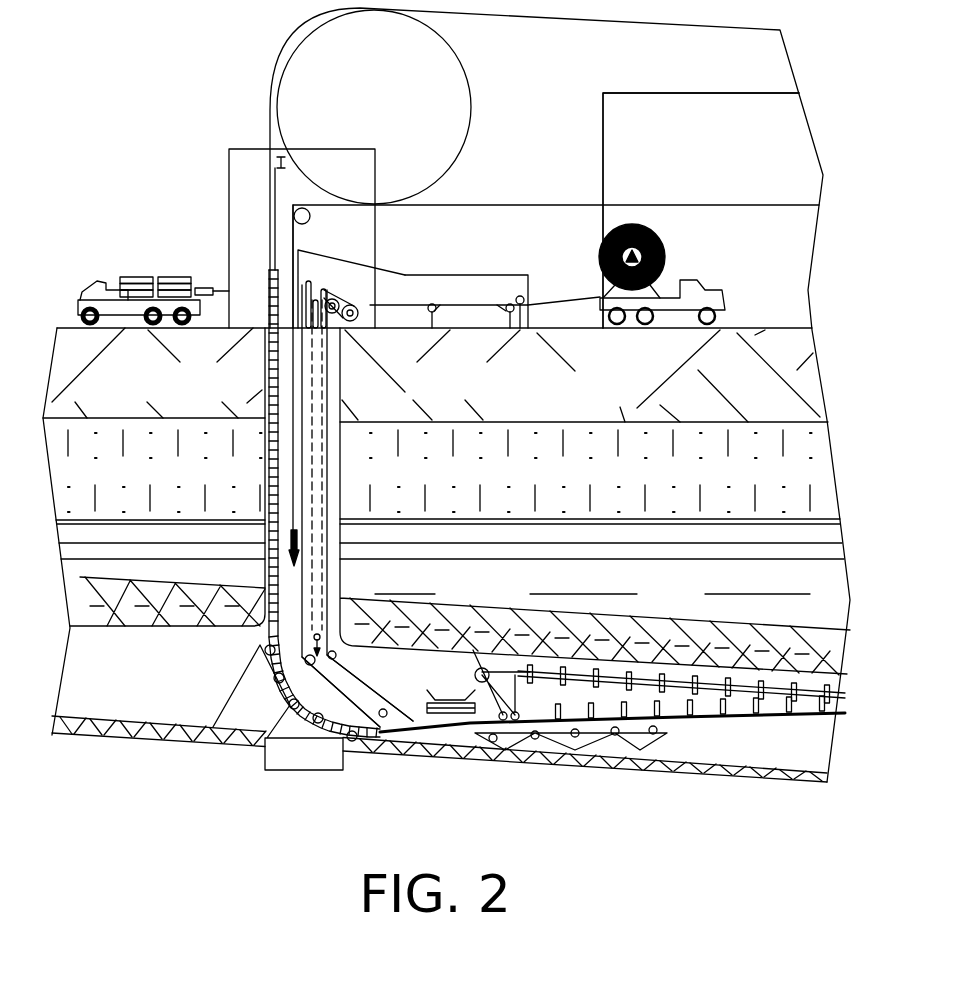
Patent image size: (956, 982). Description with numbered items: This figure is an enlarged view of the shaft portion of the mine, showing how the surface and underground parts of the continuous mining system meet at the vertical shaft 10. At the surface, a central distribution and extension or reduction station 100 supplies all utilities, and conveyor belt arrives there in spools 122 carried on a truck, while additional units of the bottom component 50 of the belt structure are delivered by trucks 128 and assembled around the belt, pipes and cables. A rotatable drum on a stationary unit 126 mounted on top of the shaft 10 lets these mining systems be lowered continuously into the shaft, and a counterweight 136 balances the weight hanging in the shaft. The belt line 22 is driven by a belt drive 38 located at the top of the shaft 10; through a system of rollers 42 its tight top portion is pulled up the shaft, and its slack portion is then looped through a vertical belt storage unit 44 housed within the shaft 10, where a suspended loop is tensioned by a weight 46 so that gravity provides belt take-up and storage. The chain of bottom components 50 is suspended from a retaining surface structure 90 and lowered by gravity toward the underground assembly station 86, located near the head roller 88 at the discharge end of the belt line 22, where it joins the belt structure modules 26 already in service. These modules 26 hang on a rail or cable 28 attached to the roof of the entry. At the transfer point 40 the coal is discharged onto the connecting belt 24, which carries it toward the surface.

The vertical shaft 10 is at (292, 580).
The continuous belt 22 is at (357, 679).
The connecting belt 24 is at (440, 698).
The belt structure module 26 is at (833, 693).
The rail or cable 28 is at (840, 676).
The belt drive 38 is at (354, 310).
The transfer point 40 is at (477, 668).
The rollers 42 is at (335, 655).
The vertical belt storage unit 44 is at (318, 490).
The weight 46 is at (313, 638).
The bottom component 50 is at (203, 287).
The underground assembly station 86 is at (775, 713).
The head roller 88 is at (473, 655).
The retaining surface structure 90 is at (292, 152).
The central distribution and extension or reduction station 100 is at (625, 95).
The spools 122 is at (662, 250).
The stationary unit 126 is at (423, 148).
The trucks 128 is at (100, 300).
The counterweight 136 is at (283, 530).